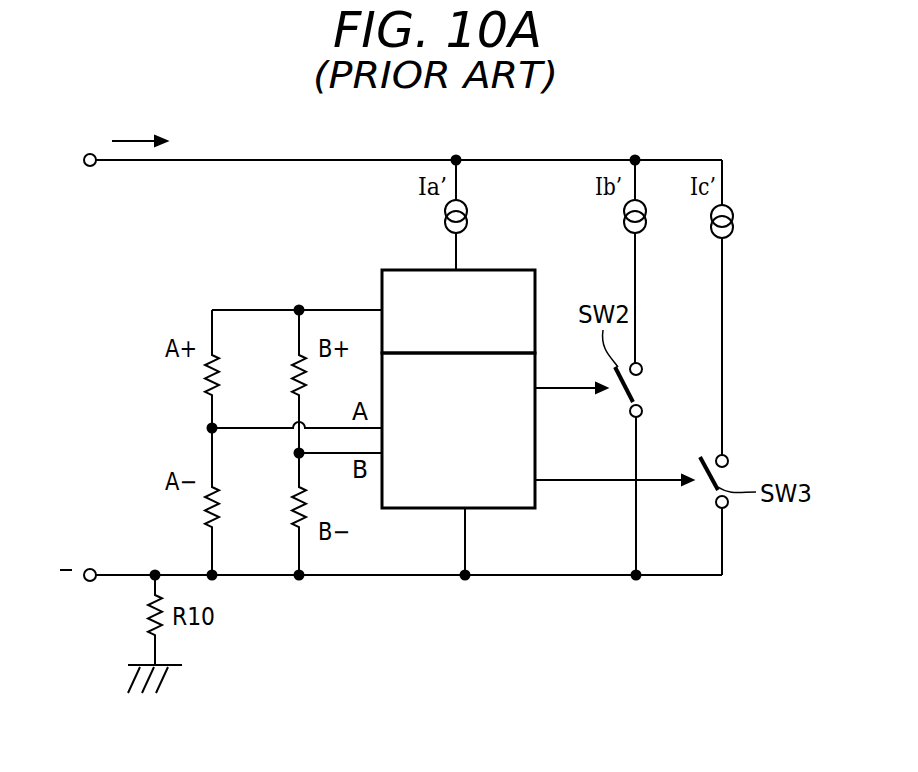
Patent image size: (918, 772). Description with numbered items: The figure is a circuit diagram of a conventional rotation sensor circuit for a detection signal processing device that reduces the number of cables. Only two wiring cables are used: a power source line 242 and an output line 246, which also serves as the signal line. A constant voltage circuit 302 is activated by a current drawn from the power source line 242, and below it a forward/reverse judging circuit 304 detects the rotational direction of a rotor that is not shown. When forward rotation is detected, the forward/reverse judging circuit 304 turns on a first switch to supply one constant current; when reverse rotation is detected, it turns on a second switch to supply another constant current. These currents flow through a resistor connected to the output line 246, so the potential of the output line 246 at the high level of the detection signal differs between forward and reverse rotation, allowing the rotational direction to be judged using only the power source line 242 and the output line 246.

The power source line 242 is at (183, 160).
The output line 246 is at (130, 575).
The constant voltage circuit 302 is at (510, 268).
The forward/reverse judging circuit 304 is at (512, 510).